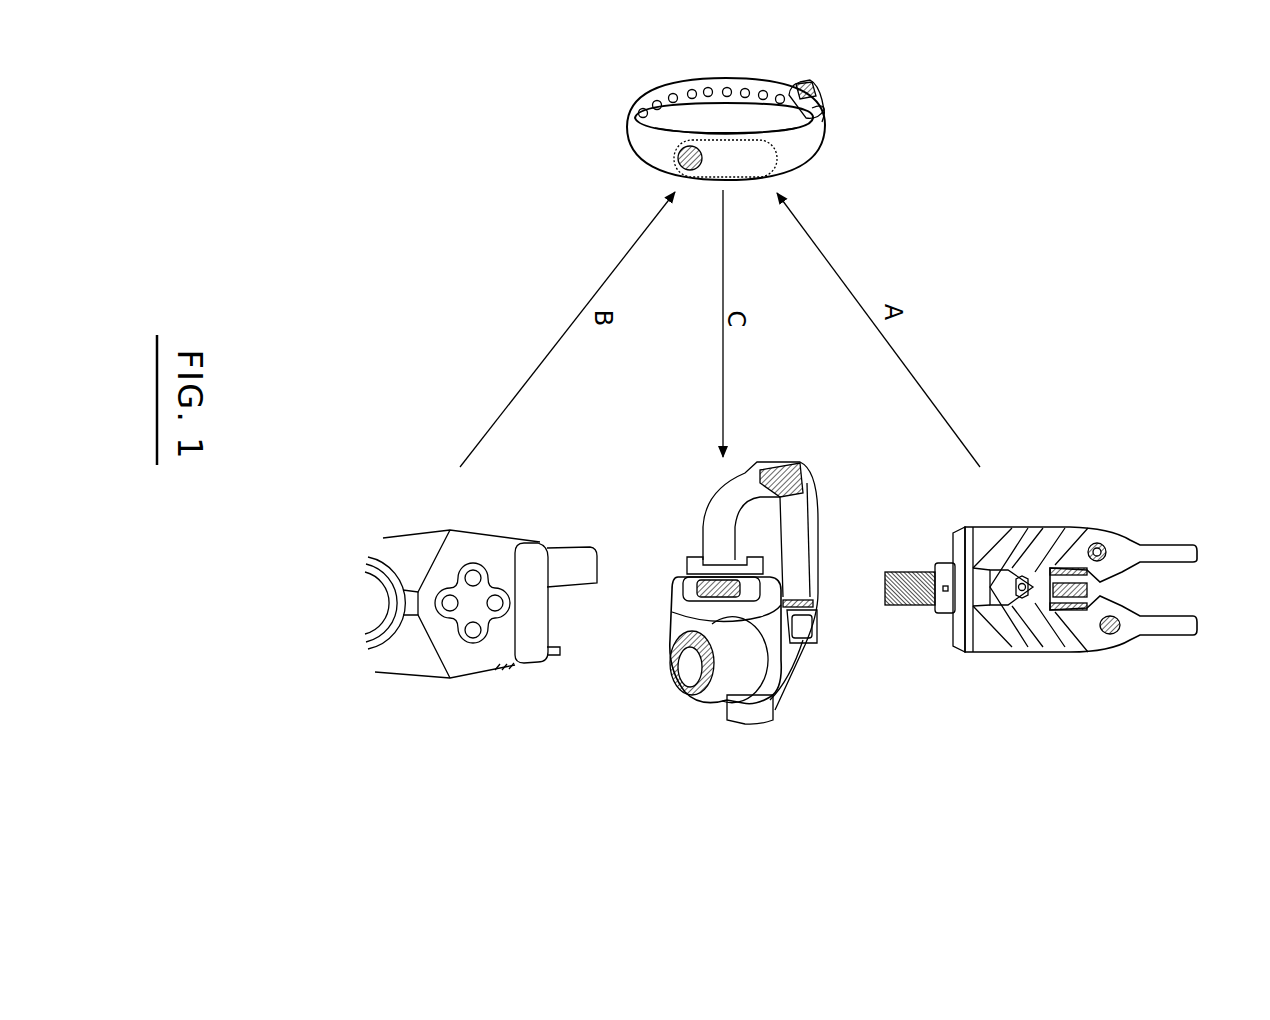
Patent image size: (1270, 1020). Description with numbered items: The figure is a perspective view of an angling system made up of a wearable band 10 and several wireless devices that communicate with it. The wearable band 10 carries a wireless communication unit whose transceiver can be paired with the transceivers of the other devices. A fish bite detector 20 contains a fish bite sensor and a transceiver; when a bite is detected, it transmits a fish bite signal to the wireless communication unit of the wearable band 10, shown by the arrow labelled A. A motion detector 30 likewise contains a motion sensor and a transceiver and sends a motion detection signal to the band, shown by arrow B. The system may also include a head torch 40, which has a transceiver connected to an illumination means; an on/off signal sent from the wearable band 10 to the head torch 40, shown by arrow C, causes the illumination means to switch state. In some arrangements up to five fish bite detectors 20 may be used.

The wearable band 10 is at (837, 112).
The fish bite detector 20 is at (1140, 513).
The motion detector 30 is at (407, 507).
The head torch 40 is at (670, 700).